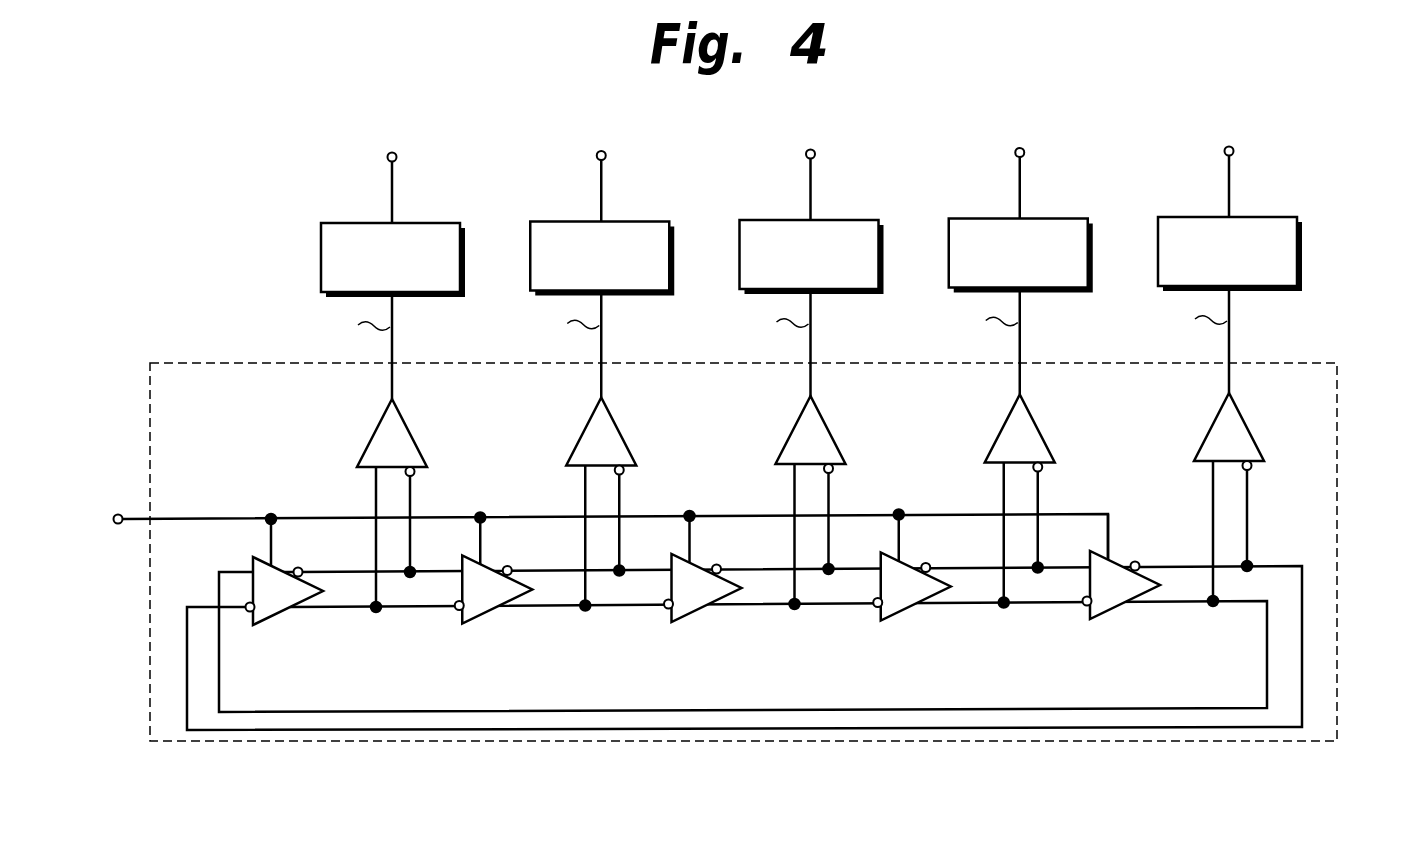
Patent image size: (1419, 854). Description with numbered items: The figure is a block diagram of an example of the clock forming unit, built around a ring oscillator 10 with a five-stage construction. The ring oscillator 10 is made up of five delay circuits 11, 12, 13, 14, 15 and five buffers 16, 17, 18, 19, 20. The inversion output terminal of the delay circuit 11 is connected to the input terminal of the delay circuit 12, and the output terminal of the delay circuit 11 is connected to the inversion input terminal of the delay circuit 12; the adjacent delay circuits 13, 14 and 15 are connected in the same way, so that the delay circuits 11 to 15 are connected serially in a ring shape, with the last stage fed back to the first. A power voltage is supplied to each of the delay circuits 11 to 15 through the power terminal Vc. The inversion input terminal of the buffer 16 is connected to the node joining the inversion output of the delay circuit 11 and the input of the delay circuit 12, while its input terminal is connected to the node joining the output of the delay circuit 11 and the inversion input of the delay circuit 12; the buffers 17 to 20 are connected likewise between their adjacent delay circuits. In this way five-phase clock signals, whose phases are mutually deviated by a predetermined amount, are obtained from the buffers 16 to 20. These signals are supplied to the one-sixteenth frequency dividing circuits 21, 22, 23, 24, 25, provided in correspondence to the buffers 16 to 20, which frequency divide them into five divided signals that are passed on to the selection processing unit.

The ring oscillator 10 is at (1337, 441).
The delay circuit 11 is at (276, 614).
The delay circuit 12 is at (494, 598).
The delay circuit 13 is at (703, 596).
The delay circuit 14 is at (912, 595).
The delay circuit 15 is at (1122, 596).
The buffer 16 is at (377, 428).
The buffer 17 is at (572, 504).
The buffer 18 is at (782, 502).
The buffer 19 is at (991, 501).
The buffer 20 is at (1200, 497).
The 1/16-frequency dividing circuit 21 is at (358, 221).
The 1/16-frequency dividing circuit 22 is at (581, 260).
The 1/16-frequency dividing circuit 23 is at (791, 258).
The 1/16-frequency dividing circuit 24 is at (1000, 257).
The 1/16-frequency dividing circuit 25 is at (1209, 255).